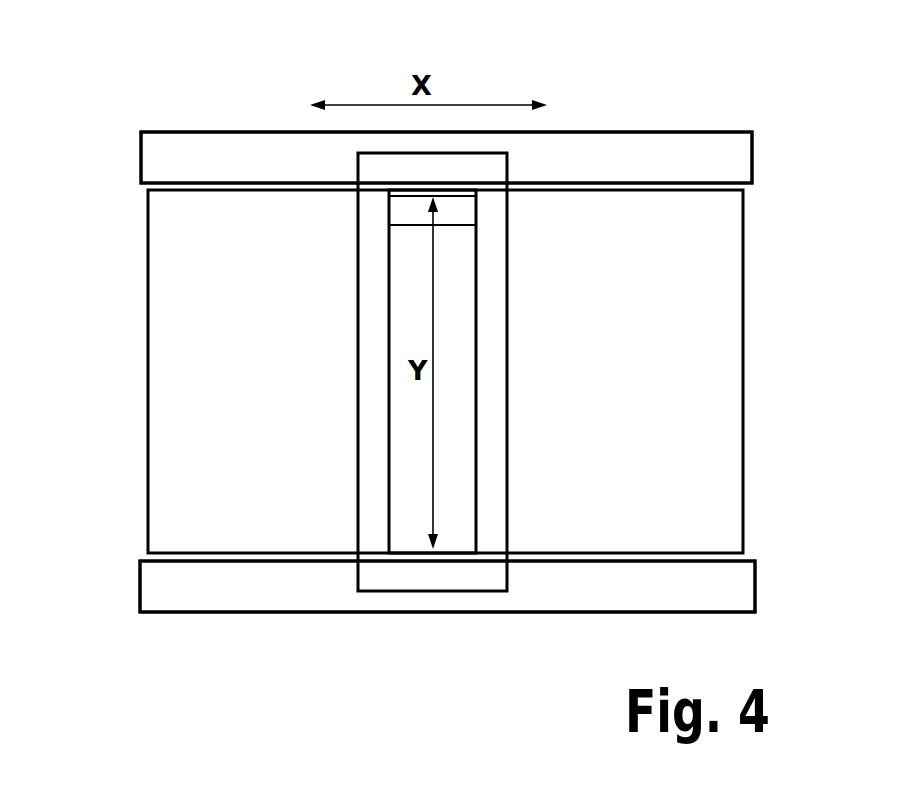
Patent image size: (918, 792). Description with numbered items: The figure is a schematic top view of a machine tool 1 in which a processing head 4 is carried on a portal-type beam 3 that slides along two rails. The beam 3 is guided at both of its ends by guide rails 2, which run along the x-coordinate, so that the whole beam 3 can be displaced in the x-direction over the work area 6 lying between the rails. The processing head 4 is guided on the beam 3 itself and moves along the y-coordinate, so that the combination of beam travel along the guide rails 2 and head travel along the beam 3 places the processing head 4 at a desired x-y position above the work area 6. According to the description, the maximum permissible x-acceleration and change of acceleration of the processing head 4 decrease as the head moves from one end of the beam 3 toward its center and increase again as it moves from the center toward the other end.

The machine tool 1 is at (398, 319).
The guide rail 2 is at (740, 158).
The beam 3 is at (497, 240).
The processing head 4 is at (410, 213).
The work area 6 is at (743, 308).